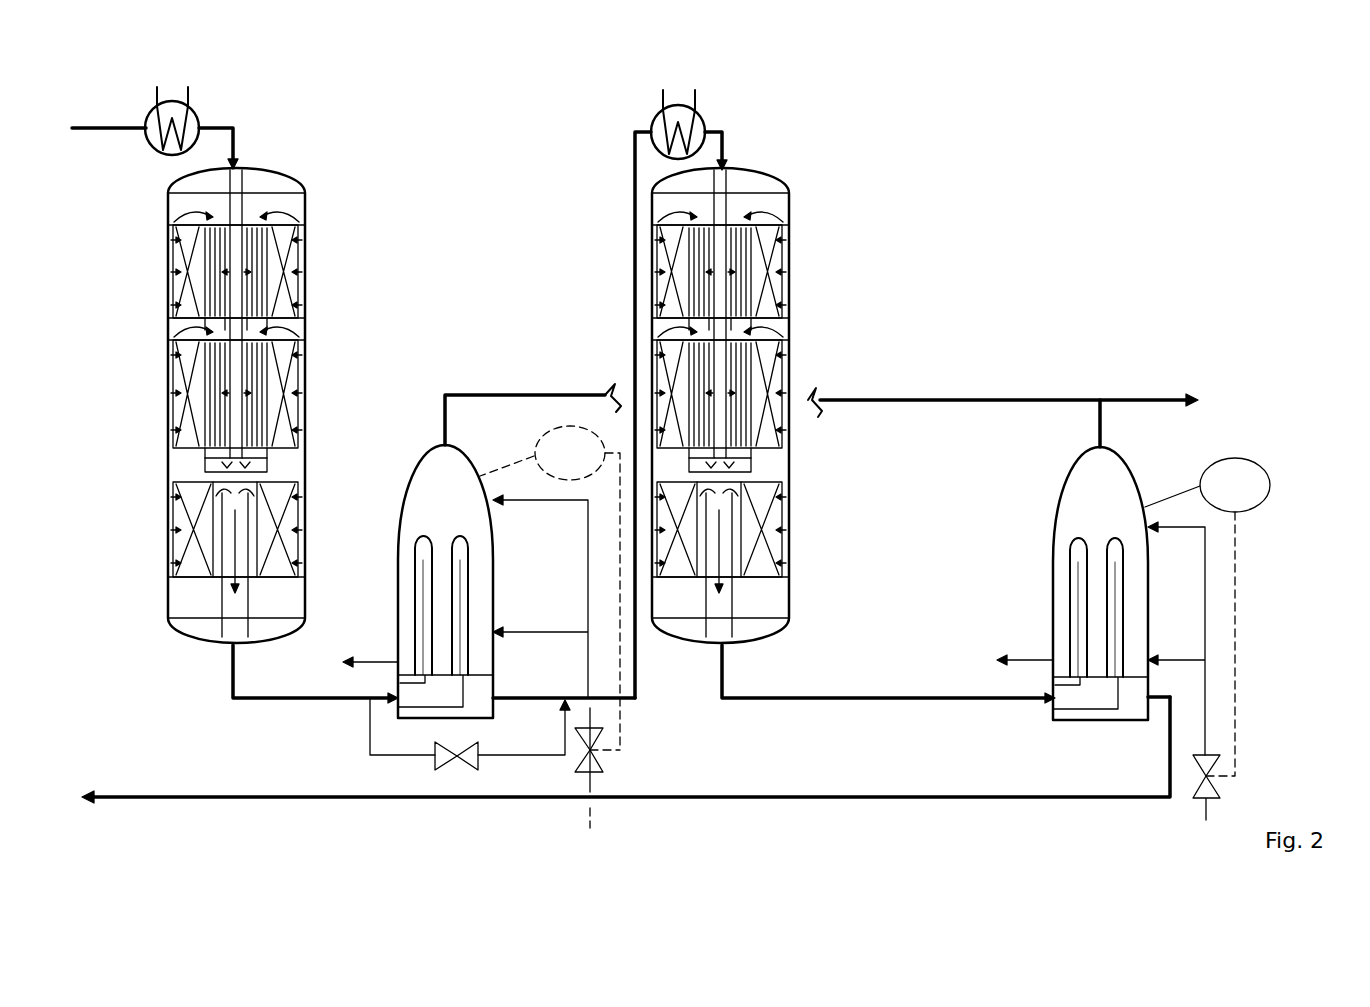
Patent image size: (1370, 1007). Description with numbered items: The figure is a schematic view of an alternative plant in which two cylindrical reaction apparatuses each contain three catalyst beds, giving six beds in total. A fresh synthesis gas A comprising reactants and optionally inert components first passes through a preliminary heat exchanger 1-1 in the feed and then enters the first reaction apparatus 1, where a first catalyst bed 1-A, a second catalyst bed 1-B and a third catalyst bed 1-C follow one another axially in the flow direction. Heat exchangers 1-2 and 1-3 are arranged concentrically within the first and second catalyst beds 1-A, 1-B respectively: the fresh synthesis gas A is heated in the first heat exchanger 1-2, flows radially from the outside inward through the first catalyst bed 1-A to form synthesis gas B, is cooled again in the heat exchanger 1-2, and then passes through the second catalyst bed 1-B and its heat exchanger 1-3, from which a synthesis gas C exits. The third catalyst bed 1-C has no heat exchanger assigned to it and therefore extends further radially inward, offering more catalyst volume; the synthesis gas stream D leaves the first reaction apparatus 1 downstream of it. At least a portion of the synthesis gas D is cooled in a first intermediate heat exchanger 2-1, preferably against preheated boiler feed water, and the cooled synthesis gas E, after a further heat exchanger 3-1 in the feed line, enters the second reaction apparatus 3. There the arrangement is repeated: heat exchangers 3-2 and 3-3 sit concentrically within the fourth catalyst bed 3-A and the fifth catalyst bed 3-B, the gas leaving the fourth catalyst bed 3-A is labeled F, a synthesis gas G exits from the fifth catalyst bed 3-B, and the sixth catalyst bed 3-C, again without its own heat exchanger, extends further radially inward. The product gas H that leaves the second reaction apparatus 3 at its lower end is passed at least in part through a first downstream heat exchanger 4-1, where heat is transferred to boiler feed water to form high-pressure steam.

The first reaction apparatus 1 is at (272, 341).
The preliminary heat exchanger 1-1 is at (198, 122).
The first catalyst bed 1-A is at (292, 233).
The first heat exchanger 1-2 is at (258, 297).
The second catalyst bed 1-B is at (287, 363).
The heat exchanger assigned to the second catalyst bed 1-3 is at (257, 430).
The third catalyst bed 1-C is at (277, 508).
The first intermediate heat exchanger 2-1 is at (433, 470).
The second reaction apparatus 3 is at (723, 370).
The heat exchanger upstream of the second reaction apparatus 3-1 is at (710, 123).
The fourth catalyst bed 3-A is at (758, 271).
The third heat exchanger 3-2 is at (774, 311).
The fifth catalyst bed 3-B is at (757, 394).
The heat exchanger assigned to the fifth catalyst bed 3-3 is at (774, 442).
The sixth catalyst bed 3-C is at (758, 529).
The first downstream heat exchanger 4-1 is at (1118, 485).
The fresh synthesis gas A is at (90, 130).
The synthesis gas B is at (180, 327).
The synthesis gas C is at (200, 348).
The synthesis gas D is at (230, 662).
The synthesis gas E is at (605, 415).
The synthesis gas F is at (625, 318).
The synthesis gas G is at (640, 360).
The product gas H is at (780, 700).